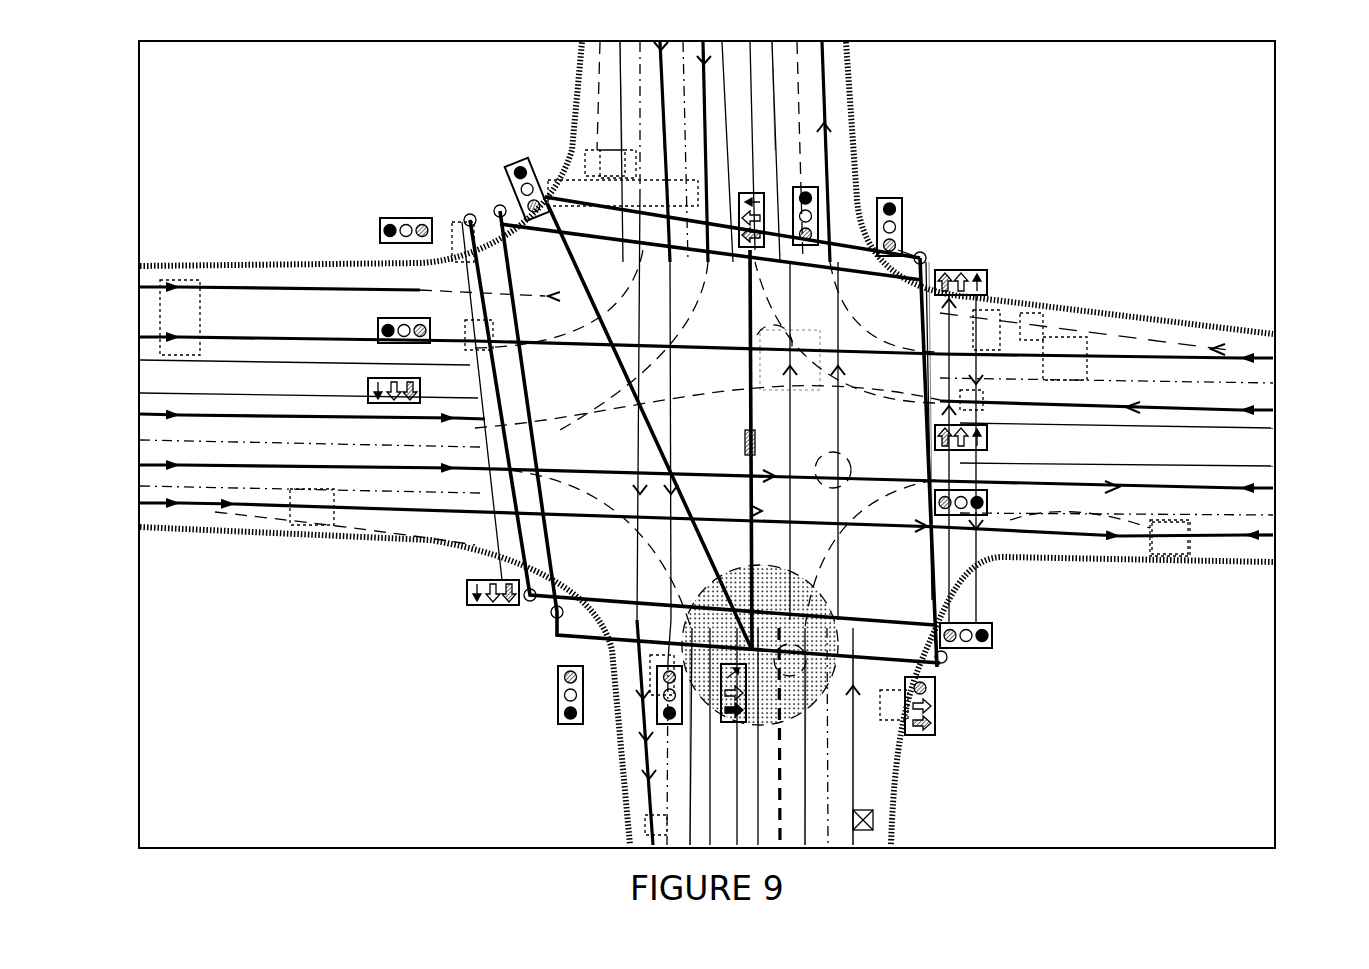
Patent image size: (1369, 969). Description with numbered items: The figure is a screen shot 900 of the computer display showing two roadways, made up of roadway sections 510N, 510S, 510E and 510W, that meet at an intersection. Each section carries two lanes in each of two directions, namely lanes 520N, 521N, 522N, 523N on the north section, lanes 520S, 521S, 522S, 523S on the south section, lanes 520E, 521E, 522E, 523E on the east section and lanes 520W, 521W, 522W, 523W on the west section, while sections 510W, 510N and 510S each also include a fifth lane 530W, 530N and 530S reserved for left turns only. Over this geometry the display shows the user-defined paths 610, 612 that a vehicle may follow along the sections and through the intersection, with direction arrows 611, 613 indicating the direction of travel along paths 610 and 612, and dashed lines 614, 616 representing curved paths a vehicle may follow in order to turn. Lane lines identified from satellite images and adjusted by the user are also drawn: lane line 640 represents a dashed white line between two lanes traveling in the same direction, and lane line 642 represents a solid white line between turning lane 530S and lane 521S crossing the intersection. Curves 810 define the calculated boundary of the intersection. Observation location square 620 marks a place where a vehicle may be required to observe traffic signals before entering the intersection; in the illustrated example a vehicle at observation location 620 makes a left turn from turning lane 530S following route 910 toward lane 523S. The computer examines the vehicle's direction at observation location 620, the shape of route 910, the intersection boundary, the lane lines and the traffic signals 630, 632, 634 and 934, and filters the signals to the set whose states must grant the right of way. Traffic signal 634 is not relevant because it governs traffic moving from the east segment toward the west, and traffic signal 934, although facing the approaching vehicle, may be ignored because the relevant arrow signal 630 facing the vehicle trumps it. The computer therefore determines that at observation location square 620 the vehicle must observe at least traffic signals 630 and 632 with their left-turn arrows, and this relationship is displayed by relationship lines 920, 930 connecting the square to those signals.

The screen shot 900 is at (88, 69).
The roadway section 510N is at (535, 88).
The roadway section 510W is at (272, 236).
The roadway section 510E is at (1100, 286).
The roadway section 510S is at (607, 762).
The lane 520N is at (815, 63).
The lane 521N is at (768, 90).
The lane 522N is at (655, 117).
The lane 523N is at (610, 143).
The left turning lane 530N is at (696, 168).
The lane 520W is at (140, 287).
The lane 521W is at (140, 337).
The left turning lane 530W is at (140, 414).
The lane 522W is at (140, 465).
The lane 523W is at (140, 503).
The lane 520E is at (1273, 356).
The lane 521E is at (1273, 408).
The lane 522E is at (1273, 487).
The lane 523E is at (1273, 534).
The lane 520S is at (855, 720).
The lane 521S is at (795, 747).
The lane 522S is at (676, 773).
The lane 523S is at (656, 798).
The left turning lane 530S is at (762, 822).
The curves 810 is at (330, 260).
The traffic signal 630 is at (508, 158).
The traffic signal 634 is at (377, 216).
The relationship line 930 is at (572, 283).
The traffic signal 934 is at (773, 213).
The traffic signal 632 is at (760, 298).
The relationship line 920 is at (934, 423).
The direction arrow 611 is at (847, 377).
The path 610 is at (935, 592).
The path 612 is at (1205, 540).
The dashed line 614 is at (593, 370).
The route 910 is at (930, 315).
The direction arrow 613 is at (548, 585).
The dashed line 616 is at (590, 613).
The observation location square 620 is at (722, 672).
The lane line 642 is at (778, 808).
The lane line 640 is at (858, 837).